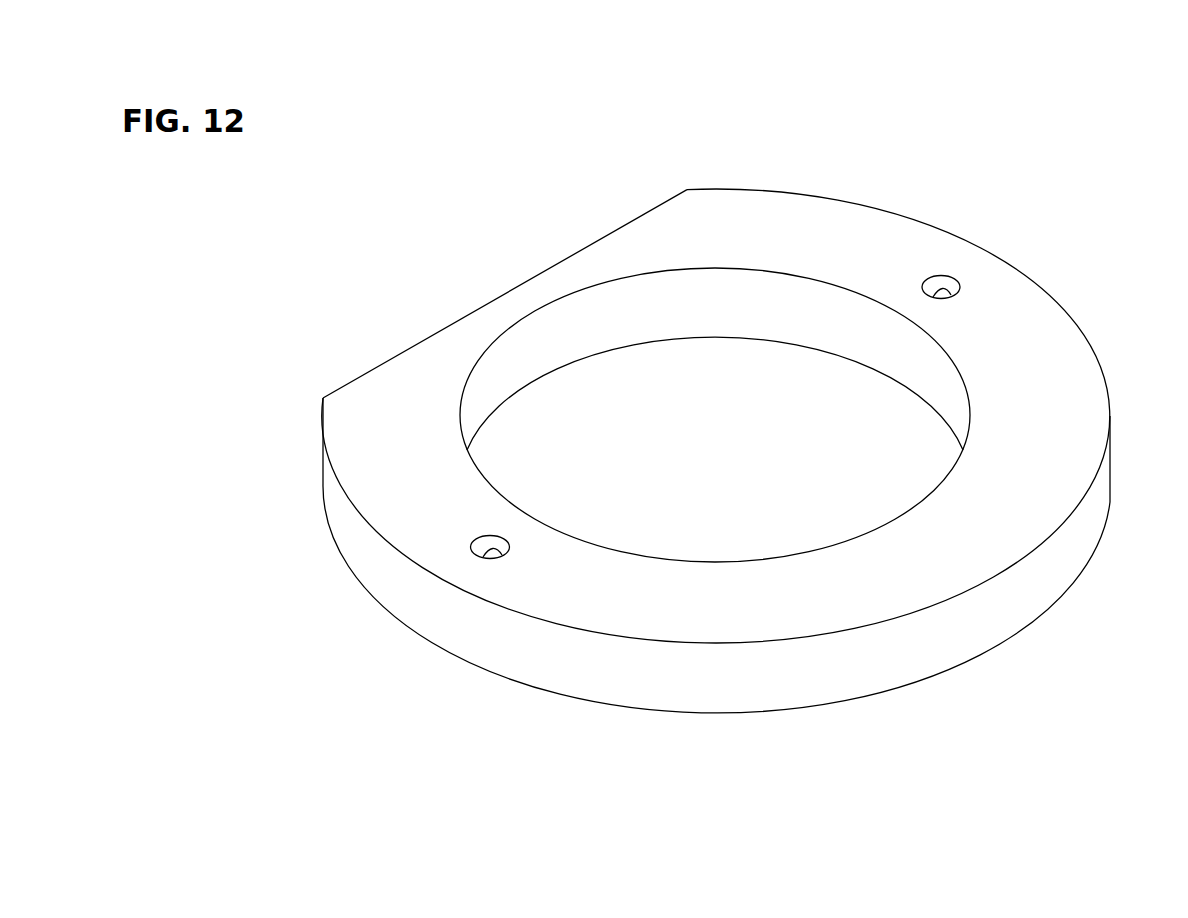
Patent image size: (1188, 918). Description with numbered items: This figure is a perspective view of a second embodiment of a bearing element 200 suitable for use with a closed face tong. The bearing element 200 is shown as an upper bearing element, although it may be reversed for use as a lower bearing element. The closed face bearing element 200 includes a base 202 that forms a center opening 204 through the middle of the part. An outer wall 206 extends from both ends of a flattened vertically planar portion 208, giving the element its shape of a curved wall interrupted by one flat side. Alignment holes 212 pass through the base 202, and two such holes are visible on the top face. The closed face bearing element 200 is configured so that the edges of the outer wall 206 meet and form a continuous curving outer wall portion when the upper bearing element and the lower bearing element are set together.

The bearing element 200 is at (737, 487).
The base 202 is at (818, 585).
The center opening 204 is at (670, 471).
The outer wall 206 is at (452, 637).
The flattened vertically planar portion 208 is at (448, 328).
The alignment holes 212 is at (492, 542).